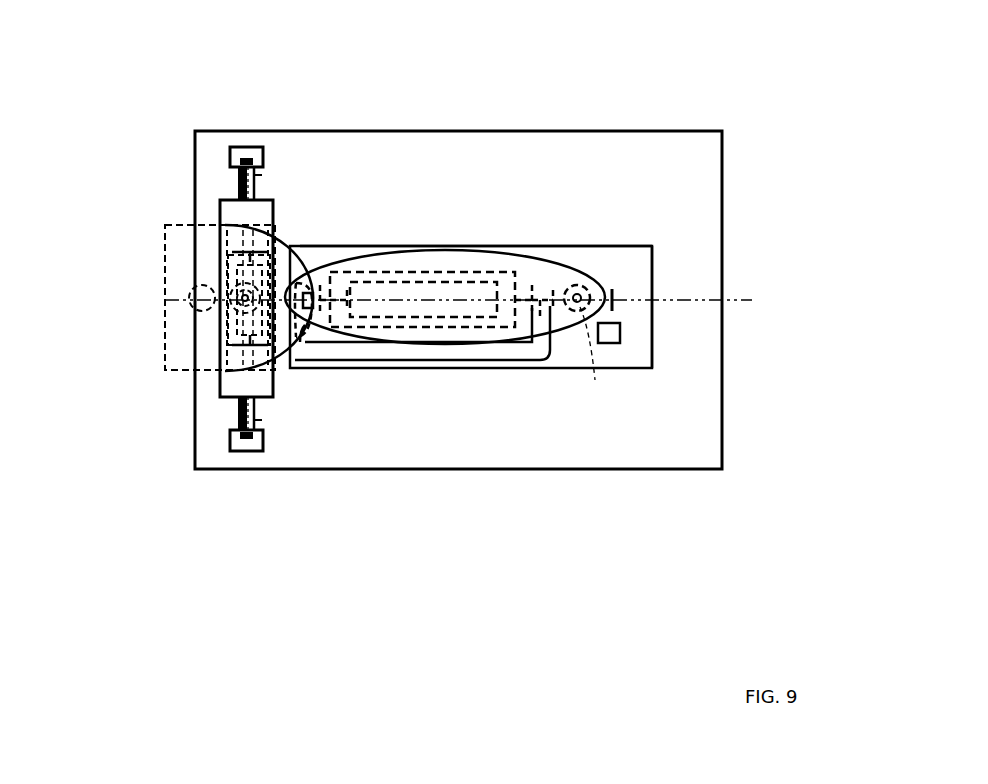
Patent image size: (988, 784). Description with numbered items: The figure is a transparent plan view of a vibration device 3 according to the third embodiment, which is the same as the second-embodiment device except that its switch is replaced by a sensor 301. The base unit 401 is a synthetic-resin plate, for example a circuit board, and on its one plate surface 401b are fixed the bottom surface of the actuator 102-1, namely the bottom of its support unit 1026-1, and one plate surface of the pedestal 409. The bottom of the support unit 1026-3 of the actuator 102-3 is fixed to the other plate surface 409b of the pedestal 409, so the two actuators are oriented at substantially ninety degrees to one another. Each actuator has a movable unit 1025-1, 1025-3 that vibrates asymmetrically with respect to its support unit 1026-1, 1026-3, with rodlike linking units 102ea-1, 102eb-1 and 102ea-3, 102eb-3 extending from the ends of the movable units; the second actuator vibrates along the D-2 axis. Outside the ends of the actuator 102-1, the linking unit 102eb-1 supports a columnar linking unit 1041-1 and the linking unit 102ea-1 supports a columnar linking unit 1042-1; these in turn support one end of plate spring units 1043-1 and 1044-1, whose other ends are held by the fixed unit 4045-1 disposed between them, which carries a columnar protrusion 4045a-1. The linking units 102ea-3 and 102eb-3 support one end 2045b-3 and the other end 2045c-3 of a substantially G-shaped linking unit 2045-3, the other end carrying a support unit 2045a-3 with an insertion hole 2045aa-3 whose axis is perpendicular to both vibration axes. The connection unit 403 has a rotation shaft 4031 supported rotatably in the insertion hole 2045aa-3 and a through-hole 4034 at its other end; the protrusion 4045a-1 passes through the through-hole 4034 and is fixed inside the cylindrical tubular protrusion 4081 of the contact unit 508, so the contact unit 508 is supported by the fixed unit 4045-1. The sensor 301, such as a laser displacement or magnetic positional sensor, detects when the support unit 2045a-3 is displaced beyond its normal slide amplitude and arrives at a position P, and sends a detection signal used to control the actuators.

The vibration device 3 is at (773, 81).
The base unit 401 is at (667, 469).
The plate surface 401b is at (667, 213).
The rotation shaft 4031 is at (597, 280).
The plate surface 409b is at (592, 263).
The D-2 axis D-2 is at (478, 299).
The contact unit 508 is at (222, 233).
The connection unit 403 is at (483, 336).
The pedestal 409 is at (340, 370).
The linking unit 2045-3 is at (397, 360).
The movable unit 1025-3 is at (442, 272).
The support unit 1026-3 is at (467, 282).
The linking unit 102ea-3 is at (338, 285).
The linking unit 102eb-3 is at (528, 285).
The insertion hole 2045aa-3 is at (578, 284).
The position P is at (622, 292).
The sensor 301 is at (613, 340).
The other end 2045c-3 is at (540, 300).
The support unit 2045a-3 is at (595, 380).
The actuator 102-3 is at (443, 327).
The one end 2045b-3 is at (302, 333).
The actuator 102-1 is at (220, 387).
The linking unit 1041-1 is at (242, 147).
The linking unit 1042-1 is at (245, 451).
The plate spring unit 1043-1 is at (240, 185).
The plate spring unit 1044-1 is at (257, 407).
The linking unit 102eb-1 is at (257, 185).
The linking unit 102ea-1 is at (258, 432).
The support unit 1026-1 is at (230, 392).
The movable unit 1025-1 is at (228, 350).
The through-hole 4034 is at (215, 272).
The cylindrical tubular protrusion 4081 is at (232, 283).
The protrusion 4045a-1 is at (228, 287).
The fixed unit 4045-1 is at (226, 322).